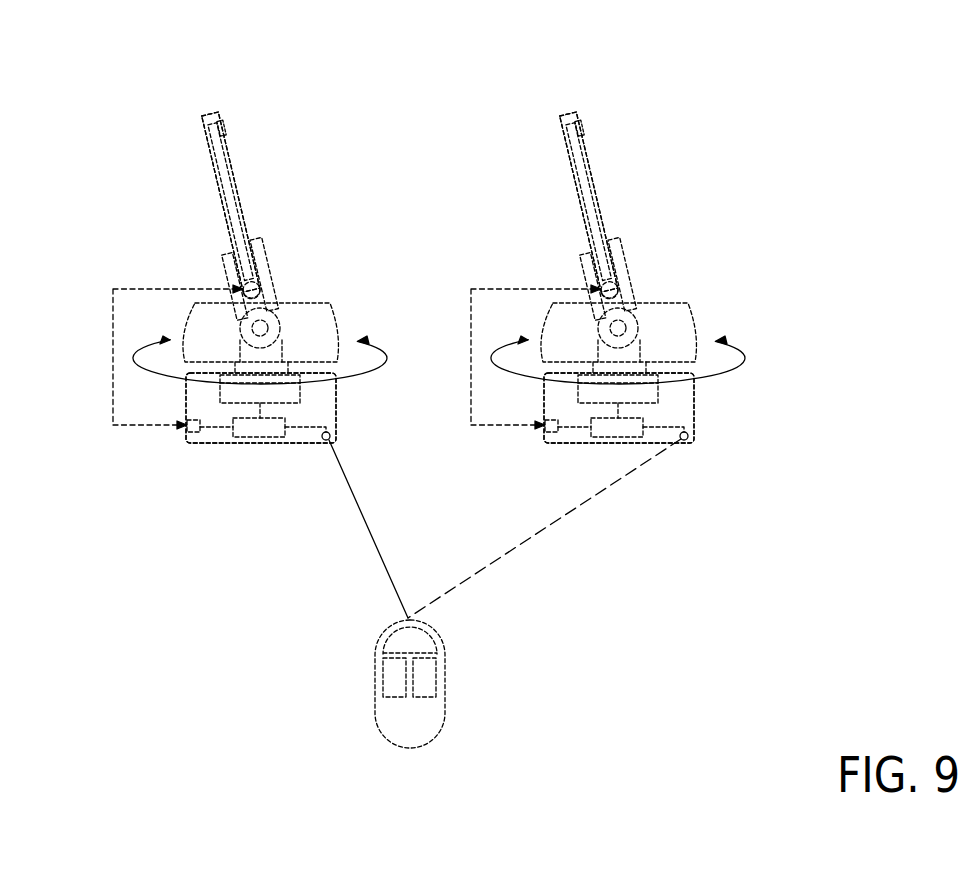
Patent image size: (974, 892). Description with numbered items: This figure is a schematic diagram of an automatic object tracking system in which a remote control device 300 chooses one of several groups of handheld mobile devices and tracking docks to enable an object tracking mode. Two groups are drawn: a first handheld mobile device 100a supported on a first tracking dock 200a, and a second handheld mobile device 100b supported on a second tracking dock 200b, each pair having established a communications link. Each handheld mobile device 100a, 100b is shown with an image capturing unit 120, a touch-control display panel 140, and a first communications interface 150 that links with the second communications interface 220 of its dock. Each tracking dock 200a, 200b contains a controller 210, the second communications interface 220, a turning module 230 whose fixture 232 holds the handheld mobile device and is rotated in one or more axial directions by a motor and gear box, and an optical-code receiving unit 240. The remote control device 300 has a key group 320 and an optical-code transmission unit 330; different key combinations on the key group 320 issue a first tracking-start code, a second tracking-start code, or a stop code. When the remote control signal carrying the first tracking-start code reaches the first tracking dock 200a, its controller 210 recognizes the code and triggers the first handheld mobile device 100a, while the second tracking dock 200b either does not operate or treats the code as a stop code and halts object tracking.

The first handheld mobile device 100a is at (282, 137).
The second handheld mobile device 100b is at (635, 173).
The image capturing unit 120 is at (225, 130).
The touch-control display panel 140 is at (215, 165).
The first communications interface 150 is at (252, 288).
The first tracking dock 200a is at (175, 262).
The second tracking dock 200b is at (577, 308).
The controller 210 is at (257, 428).
The second communications interface 220 is at (187, 430).
The turning module 230 is at (283, 397).
The fixture 232 is at (262, 243).
The optical-code receiving unit 240 is at (333, 436).
The remote control device 300 is at (466, 650).
The key group 320 is at (395, 678).
The optical-code transmission unit 330 is at (408, 620).